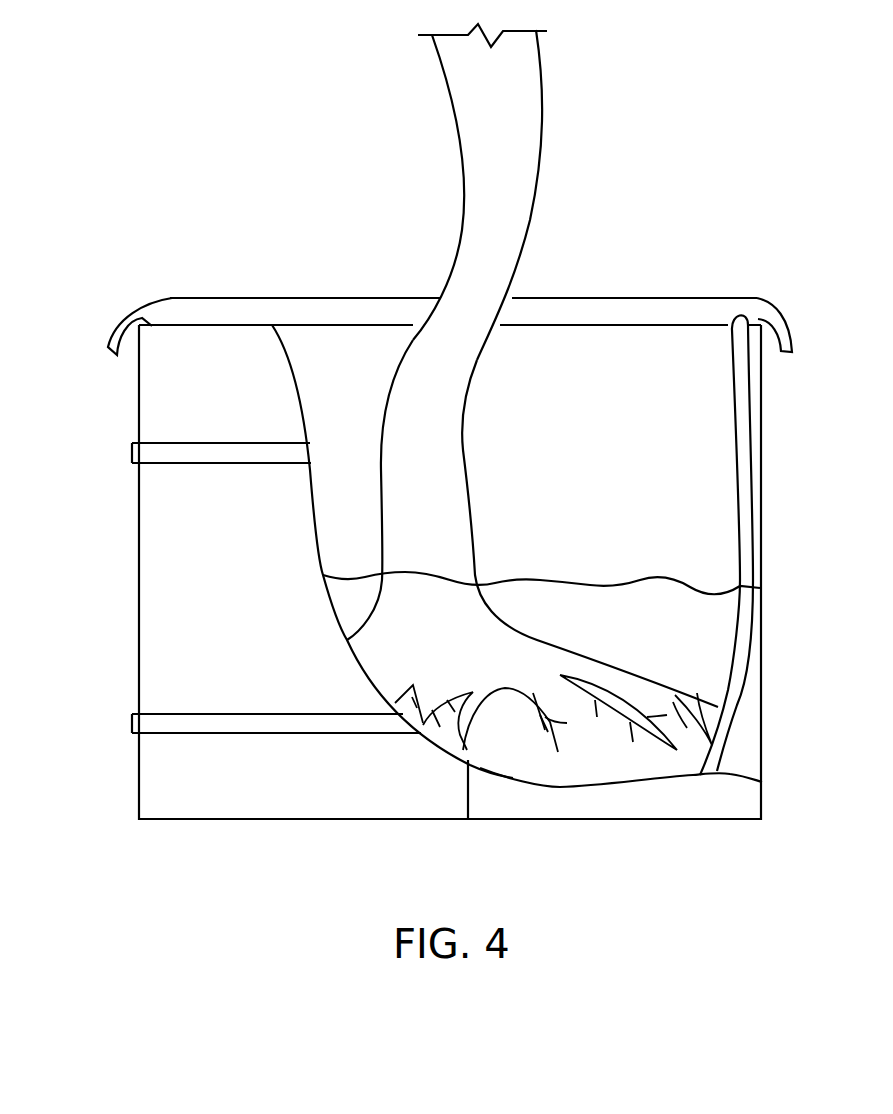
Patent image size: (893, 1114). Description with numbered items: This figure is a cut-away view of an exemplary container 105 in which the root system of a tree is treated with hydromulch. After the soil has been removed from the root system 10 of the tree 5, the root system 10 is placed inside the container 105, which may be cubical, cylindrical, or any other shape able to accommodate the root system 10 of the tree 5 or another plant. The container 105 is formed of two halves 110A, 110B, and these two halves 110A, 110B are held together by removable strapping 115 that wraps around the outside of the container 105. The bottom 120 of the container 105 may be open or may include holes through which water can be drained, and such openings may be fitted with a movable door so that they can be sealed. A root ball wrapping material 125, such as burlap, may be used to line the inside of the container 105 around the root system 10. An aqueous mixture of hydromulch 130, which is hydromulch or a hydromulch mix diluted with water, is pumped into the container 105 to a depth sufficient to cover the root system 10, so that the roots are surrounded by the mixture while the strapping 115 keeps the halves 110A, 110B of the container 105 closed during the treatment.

The tree 5 is at (586, 148).
The root system 10 is at (458, 647).
The container 105 is at (97, 590).
The first half of container 110A is at (215, 797).
The second half of container 110B is at (725, 806).
The removable strapping 115 is at (132, 452).
The bottom of container 120 is at (563, 821).
The root ball wrapping material 125 is at (728, 407).
The aqueous mixture of hydromulch 130 is at (692, 598).